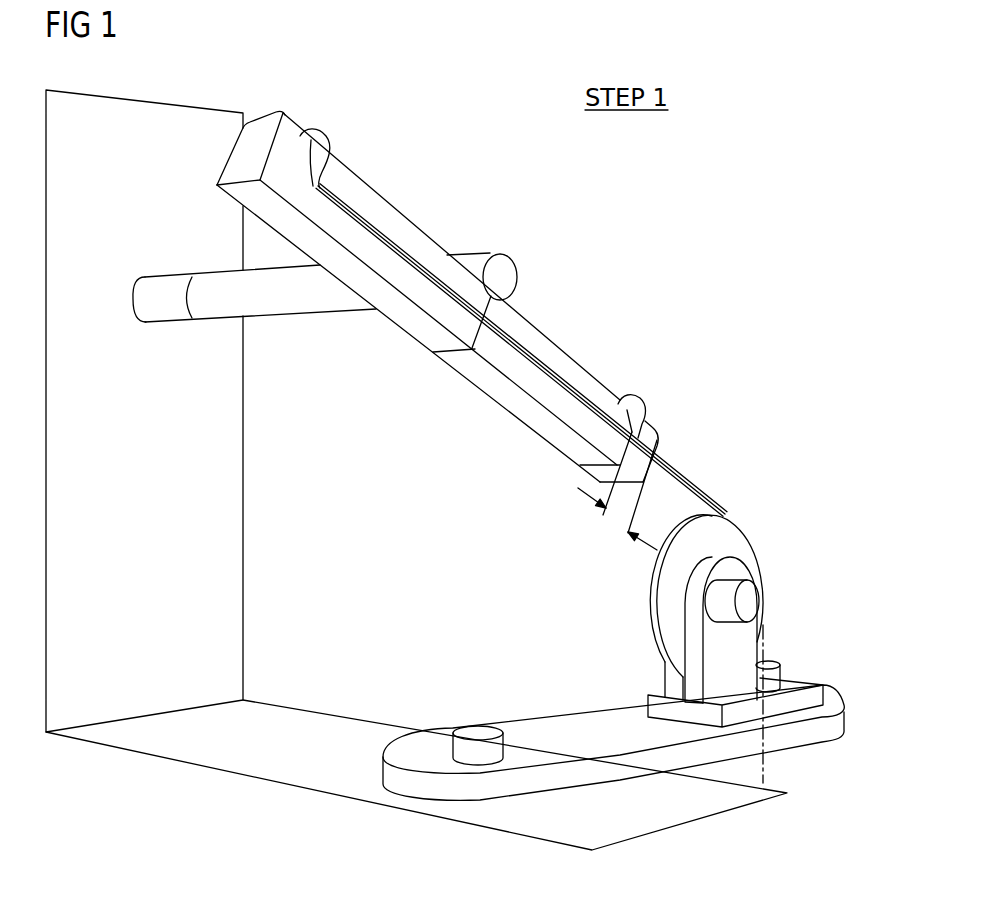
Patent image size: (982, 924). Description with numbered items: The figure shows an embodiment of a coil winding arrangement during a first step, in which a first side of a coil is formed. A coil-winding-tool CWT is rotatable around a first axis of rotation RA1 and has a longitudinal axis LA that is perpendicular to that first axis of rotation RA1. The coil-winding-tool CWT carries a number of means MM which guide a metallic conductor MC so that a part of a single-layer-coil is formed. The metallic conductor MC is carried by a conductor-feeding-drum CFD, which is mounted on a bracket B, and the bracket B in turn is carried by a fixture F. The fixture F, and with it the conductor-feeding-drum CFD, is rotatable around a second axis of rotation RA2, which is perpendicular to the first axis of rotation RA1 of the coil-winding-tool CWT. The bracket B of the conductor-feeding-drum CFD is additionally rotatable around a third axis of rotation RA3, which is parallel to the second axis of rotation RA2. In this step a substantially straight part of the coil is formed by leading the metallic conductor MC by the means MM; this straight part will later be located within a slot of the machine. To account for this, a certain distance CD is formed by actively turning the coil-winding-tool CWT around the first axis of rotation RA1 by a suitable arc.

The longitudinal axis LA is at (247, 143).
The means MM is at (333, 137).
The first axis of rotation RA1 is at (120, 302).
The coil-winding-tool CWT is at (658, 421).
The metallic conductor MC is at (697, 478).
The distance CD is at (607, 491).
The conductor-feeding-drum CFD is at (757, 527).
The third axis of rotation RA3 is at (767, 637).
The bracket B is at (717, 637).
The second axis of rotation RA2 is at (478, 817).
The fixture F is at (802, 748).